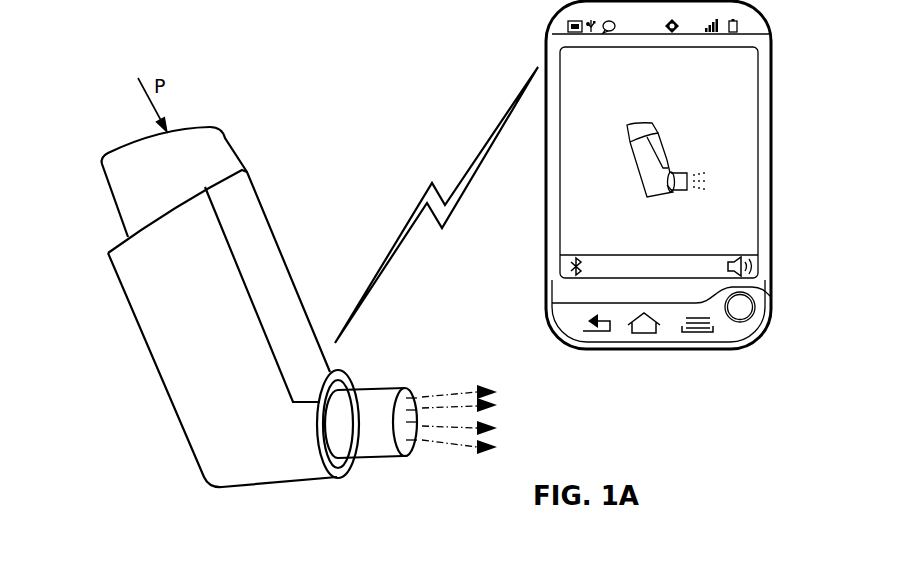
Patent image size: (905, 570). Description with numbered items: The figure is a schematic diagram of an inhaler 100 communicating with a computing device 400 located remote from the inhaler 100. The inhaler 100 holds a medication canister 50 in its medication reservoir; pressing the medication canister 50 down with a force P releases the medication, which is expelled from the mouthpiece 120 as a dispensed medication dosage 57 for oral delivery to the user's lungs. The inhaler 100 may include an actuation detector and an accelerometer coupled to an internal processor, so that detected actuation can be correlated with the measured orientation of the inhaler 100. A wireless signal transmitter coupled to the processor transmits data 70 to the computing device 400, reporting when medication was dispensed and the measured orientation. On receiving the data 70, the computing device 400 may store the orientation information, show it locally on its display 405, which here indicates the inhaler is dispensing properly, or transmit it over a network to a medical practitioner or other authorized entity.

The medication canister 50 is at (230, 148).
The dispensed medication dosage 57 is at (455, 407).
The data 70 is at (432, 183).
The inhaler 100 is at (172, 400).
The mouthpiece 120 is at (383, 390).
The computing device 400 is at (773, 113).
The display 405 is at (695, 143).